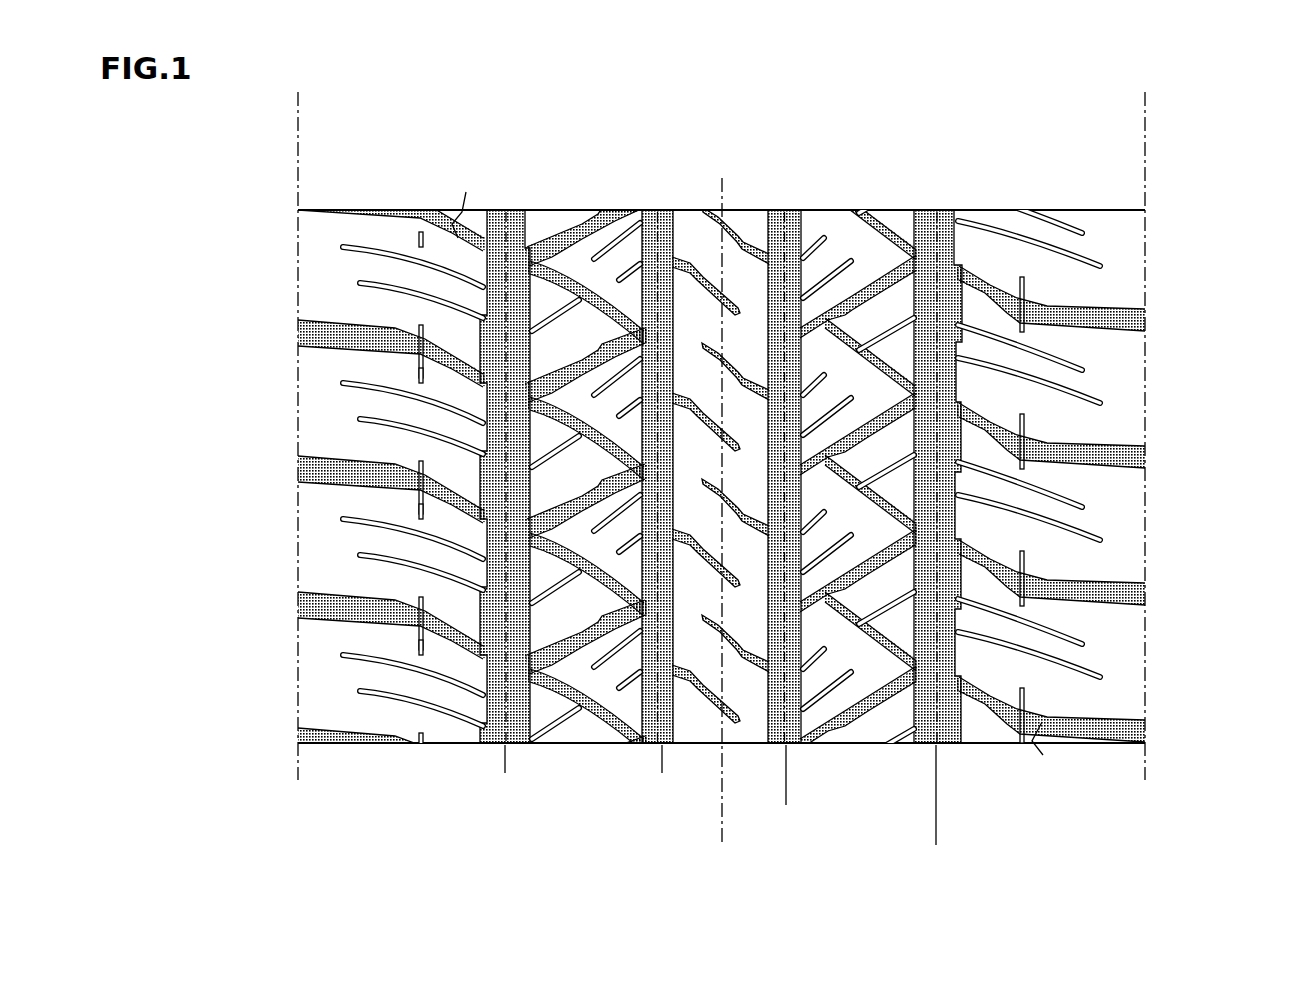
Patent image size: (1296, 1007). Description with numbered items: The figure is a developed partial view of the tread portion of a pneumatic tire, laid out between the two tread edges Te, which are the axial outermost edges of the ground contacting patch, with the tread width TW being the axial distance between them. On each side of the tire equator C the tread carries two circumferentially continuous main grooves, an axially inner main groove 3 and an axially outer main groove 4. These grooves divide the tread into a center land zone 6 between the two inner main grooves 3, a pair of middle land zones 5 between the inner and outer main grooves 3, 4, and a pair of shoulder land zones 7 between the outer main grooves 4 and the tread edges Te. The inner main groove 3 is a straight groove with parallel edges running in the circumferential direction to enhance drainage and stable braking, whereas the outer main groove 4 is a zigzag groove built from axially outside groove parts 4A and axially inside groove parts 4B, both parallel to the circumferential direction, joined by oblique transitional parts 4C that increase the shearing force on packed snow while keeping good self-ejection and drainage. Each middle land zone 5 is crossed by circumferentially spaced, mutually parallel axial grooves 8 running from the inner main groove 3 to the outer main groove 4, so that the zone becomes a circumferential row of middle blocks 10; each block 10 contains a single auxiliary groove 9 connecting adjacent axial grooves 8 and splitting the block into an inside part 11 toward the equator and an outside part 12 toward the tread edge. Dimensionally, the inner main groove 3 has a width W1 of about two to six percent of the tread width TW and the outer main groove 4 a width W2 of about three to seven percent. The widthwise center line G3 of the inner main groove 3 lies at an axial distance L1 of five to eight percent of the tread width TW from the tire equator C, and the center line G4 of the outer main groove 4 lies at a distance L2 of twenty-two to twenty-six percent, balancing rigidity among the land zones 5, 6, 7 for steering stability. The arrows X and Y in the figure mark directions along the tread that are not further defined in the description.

The axially inner main groove 3 is at (665, 233).
The axially outer main groove 4 is at (520, 235).
The axially outside groove parts 4A is at (960, 312).
The axially inside groove parts 4B is at (960, 322).
The transitional parts 4C is at (960, 306).
The middle land zones 5 is at (610, 235).
The center land zone 6 is at (748, 235).
The shoulder land zones 7 is at (372, 235).
The axial grooves 8 is at (553, 373).
The auxiliary groove 9 is at (560, 696).
The middle blocks 10 is at (886, 158).
The inside part 11 is at (813, 360).
The outside part 12 is at (887, 313).
The tread edges Te is at (297, 170).
The tread width TW is at (1145, 103).
The tire equator C is at (719, 499).
The width of the axially inner main groove W1 is at (832, 495).
The width of the axially outer main groove W2 is at (992, 627).
The axial distance of inner main groove center line from tire equator L1 is at (723, 785).
The axial distance of outer main groove center line from tire equator L2 is at (723, 838).
The widthwise center line of the axially inner main groove G3 is at (662, 748).
The widthwise center line of the axially outer main groove G4 is at (505, 748).
The direction X is at (922, 520).
The direction Y is at (813, 323).